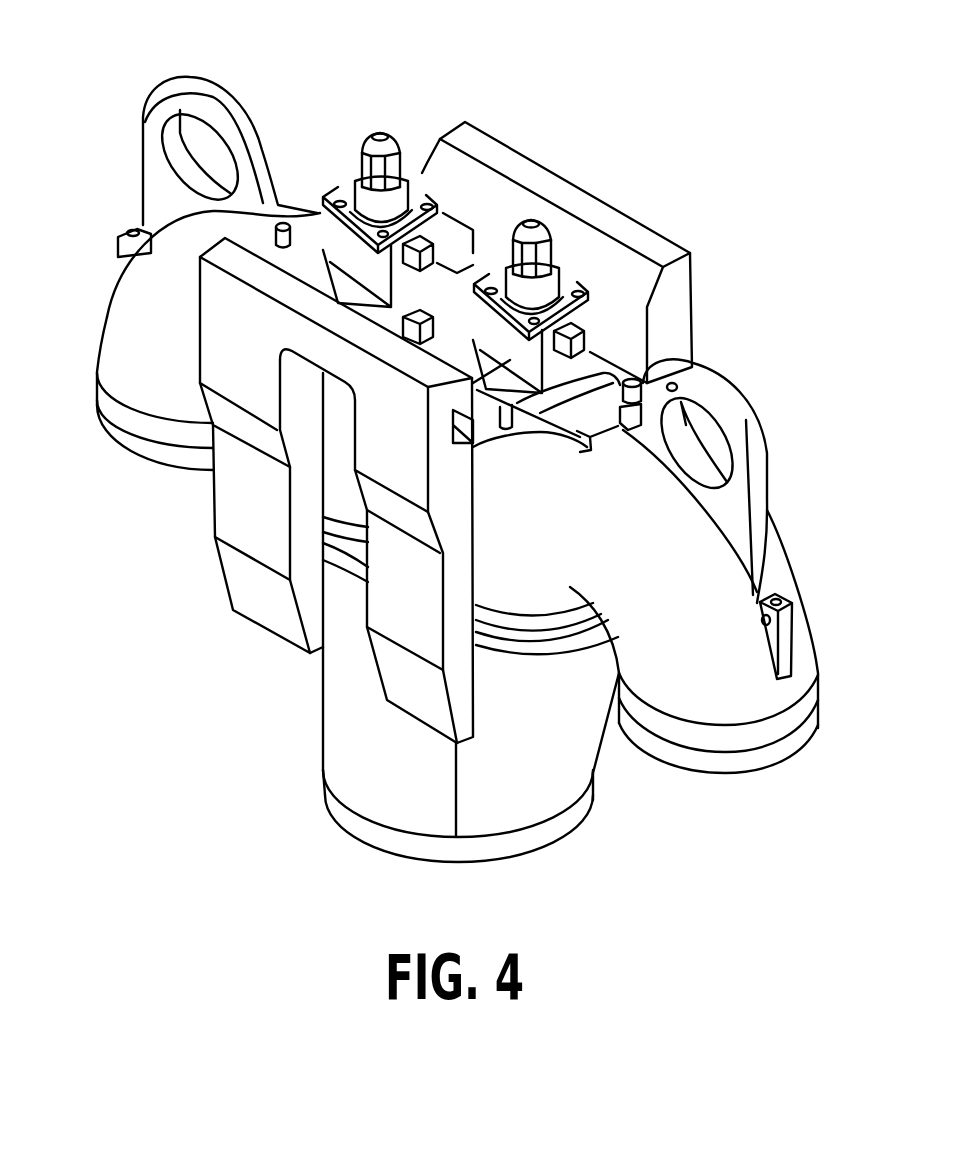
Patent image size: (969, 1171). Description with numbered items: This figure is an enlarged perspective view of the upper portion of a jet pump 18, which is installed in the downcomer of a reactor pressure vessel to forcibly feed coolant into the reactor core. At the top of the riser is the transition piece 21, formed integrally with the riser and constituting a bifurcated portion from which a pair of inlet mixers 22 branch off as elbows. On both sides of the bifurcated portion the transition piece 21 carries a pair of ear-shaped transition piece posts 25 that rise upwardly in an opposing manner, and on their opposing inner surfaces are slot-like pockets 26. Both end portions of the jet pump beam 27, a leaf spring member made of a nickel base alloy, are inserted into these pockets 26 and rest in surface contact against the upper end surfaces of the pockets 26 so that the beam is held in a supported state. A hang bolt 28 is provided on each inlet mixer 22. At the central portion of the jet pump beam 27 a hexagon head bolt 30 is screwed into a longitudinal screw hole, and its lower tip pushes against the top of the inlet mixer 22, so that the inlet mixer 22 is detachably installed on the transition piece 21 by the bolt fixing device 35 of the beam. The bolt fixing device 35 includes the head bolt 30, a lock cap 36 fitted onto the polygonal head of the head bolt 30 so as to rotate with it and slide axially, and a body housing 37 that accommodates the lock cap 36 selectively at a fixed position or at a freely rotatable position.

The jet pump 18 is at (712, 243).
The transition piece 21 is at (322, 712).
The inlet mixer 22 is at (106, 315).
The transition piece post 25 is at (693, 282).
The pocket 26 is at (325, 205).
The jet pump beam 27 is at (600, 372).
The hang bolt 28 is at (226, 102).
The head bolt 30 is at (381, 132).
The bolt fixing device 35 is at (411, 131).
The lock cap 36 is at (432, 140).
The body housing 37 is at (423, 168).